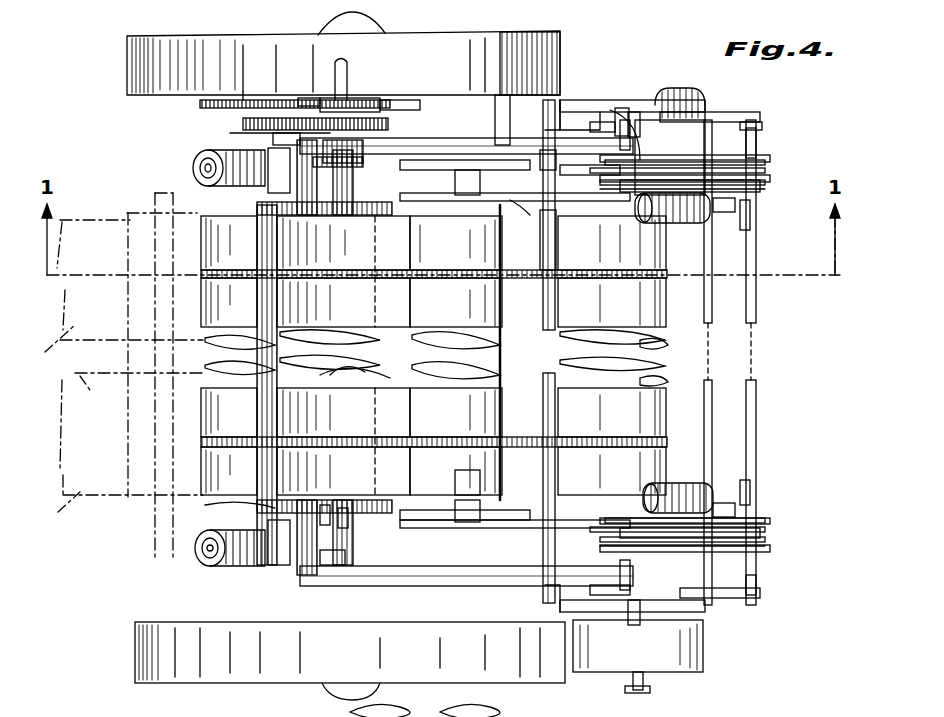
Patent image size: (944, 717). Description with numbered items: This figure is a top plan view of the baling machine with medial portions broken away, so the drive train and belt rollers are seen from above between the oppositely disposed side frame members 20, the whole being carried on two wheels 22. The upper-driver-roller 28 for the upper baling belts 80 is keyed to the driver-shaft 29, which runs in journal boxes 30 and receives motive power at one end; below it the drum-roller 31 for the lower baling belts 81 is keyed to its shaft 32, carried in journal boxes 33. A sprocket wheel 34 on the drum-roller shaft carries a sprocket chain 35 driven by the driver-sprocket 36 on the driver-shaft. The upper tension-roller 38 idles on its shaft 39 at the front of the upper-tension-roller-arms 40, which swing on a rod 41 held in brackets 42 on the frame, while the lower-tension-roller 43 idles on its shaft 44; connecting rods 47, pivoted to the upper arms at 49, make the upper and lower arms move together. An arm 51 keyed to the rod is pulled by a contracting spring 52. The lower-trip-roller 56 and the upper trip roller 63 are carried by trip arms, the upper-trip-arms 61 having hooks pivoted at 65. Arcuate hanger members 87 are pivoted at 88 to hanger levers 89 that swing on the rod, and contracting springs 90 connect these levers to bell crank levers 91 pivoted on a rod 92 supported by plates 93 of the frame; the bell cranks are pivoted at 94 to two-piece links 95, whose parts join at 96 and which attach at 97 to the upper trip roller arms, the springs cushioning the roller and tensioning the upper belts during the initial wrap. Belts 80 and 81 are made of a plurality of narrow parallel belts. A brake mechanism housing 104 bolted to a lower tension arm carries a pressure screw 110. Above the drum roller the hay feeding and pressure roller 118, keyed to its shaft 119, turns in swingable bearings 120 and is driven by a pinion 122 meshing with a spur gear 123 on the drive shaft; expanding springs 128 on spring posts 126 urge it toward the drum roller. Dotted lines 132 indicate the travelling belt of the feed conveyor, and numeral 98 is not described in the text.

The side frame members 20 is at (440, 112).
The wheels 22 is at (135, 53).
The upper-driver-roller 28 is at (350, 372).
The driver-shaft 29 is at (348, 64).
The journal boxes 30 is at (352, 165).
The drum-roller 31 is at (210, 340).
The drum-roller shaft 32 is at (308, 98).
The journal boxes 33 is at (330, 600).
The sprocket wheel 34 is at (200, 104).
The sprocket chain 35 is at (248, 100).
The driver-sprocket 36 is at (370, 98).
The upper tension-roller 38 is at (312, 270).
The shaft 39 is at (268, 197).
The upper-tension-roller-arms 40 is at (390, 148).
The rod 41 is at (556, 330).
The brackets 42 is at (560, 110).
The lower-tension-roller 43 is at (665, 345).
The shaft 44 is at (640, 160).
The connecting rods 47 is at (598, 120).
The pivot 49 is at (640, 110).
The arm 51 is at (625, 108).
The spring 52 is at (680, 95).
The lower-trip-roller 56 is at (495, 345).
The upper-trip-arms 61 is at (475, 145).
The upper trip roller 63 is at (465, 268).
The pivot 65 is at (462, 478).
The upper baling belts 80 is at (400, 255).
The lower baling belts 81 is at (620, 298).
The hanger members 87 is at (480, 193).
The pivot 88 is at (440, 185).
The hanger levers 89 is at (545, 210).
The contracting springs 90 is at (690, 225).
The bell crank levers 91 is at (760, 205).
The rod 92 is at (762, 126).
The plates 93 is at (730, 118).
The pivot 94 is at (765, 158).
The links 95 is at (570, 200).
The pivot 96 is at (625, 120).
The pivot 97 is at (478, 183).
The rod 98 is at (765, 183).
The brake mechanism housing 104 is at (695, 658).
The pressure screw 110 is at (648, 690).
The hay feeding and pressure roller 118 is at (255, 300).
The shaft 119 is at (273, 138).
The swingable bearings 120 is at (270, 150).
The pinion 122 is at (243, 124).
The spur gear 123 is at (400, 100).
The spring posts 126 is at (200, 548).
The expanding spring 128 is at (205, 562).
The travelling belt 132 is at (74, 373).